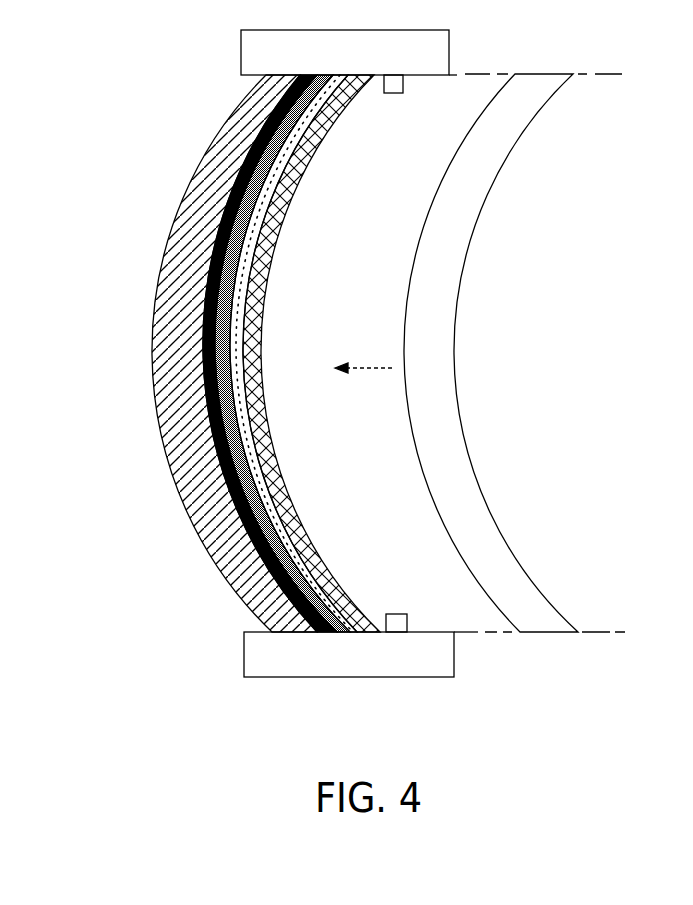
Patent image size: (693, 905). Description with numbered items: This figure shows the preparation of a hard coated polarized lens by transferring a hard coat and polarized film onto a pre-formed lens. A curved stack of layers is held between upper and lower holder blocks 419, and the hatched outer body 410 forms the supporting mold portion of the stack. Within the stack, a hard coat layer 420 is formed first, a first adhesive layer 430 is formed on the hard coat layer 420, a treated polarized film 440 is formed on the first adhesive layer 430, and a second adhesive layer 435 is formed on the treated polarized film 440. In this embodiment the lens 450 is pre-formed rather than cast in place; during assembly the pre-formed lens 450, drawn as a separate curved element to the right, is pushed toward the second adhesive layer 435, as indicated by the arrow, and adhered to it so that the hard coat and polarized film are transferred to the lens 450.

The electrode / lens holder block 419 is at (263, 53).
The lens housing layer 410 is at (228, 162).
The hard coat layer 420 is at (207, 273).
The first adhesive layer 430 is at (222, 335).
The second adhesive layer 435 is at (250, 393).
The treated polarized film 440 is at (253, 462).
The lens 450 is at (432, 299).